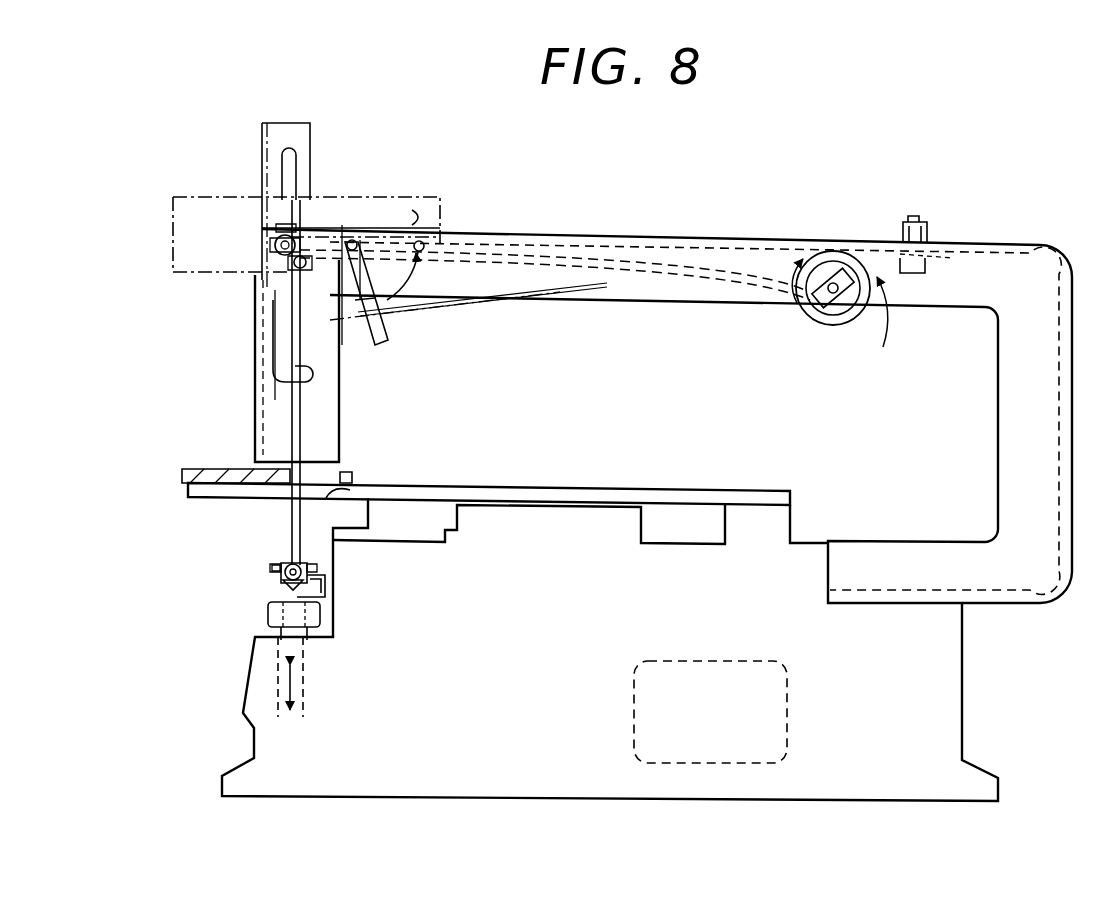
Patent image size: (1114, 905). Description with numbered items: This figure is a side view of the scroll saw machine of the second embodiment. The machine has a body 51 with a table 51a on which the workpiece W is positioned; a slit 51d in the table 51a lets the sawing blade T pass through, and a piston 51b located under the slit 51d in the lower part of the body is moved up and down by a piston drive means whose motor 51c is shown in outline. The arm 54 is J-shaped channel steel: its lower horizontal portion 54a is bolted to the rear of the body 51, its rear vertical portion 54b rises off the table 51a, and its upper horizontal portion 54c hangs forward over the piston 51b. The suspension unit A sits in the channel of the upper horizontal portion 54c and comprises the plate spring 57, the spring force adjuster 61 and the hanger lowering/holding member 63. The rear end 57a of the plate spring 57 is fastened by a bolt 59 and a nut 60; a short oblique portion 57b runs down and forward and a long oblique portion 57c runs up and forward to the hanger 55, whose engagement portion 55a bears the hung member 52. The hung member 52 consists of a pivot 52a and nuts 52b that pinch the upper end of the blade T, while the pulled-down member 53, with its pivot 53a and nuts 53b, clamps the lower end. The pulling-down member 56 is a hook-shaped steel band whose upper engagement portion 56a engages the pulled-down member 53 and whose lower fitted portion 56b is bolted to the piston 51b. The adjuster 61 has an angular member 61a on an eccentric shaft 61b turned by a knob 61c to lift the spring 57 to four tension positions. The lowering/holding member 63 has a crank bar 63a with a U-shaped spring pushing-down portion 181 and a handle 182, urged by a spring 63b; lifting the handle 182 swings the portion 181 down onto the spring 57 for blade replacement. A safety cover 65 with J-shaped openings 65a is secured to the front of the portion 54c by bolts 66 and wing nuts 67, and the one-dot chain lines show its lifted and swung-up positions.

The body 51 is at (947, 720).
The table 51a is at (753, 494).
The piston 51b is at (278, 672).
The motor 51c is at (782, 703).
The slit 51d is at (340, 493).
The hung member 52 is at (170, 300).
The pivot 52a is at (352, 240).
The nut 52b is at (313, 215).
The pulled-down member 53 is at (280, 558).
The pivot 53a is at (303, 563).
The nut 53b is at (297, 562).
The arm 54 is at (1078, 262).
The lower horizontal portion 54a is at (935, 558).
The rear vertical portion 54b is at (1030, 404).
The upper horizontal portion 54c is at (672, 236).
The hanger 55 is at (380, 345).
The engagement portion 55a is at (294, 262).
The pulling-down member 56 is at (325, 588).
The upper engagement portion 56a is at (280, 572).
The lower fitted portion 56b is at (277, 598).
The plate spring 57 is at (729, 268).
The rear end 57a is at (958, 251).
The short oblique portion 57b is at (800, 312).
The long oblique portion 57c is at (678, 285).
The bolt 59 is at (912, 275).
The nut 60 is at (900, 220).
The spring force adjuster 61 is at (852, 332).
The angular member 61a is at (896, 328).
The shaft 61b is at (811, 252).
The knob 61c is at (823, 327).
The hanger lowering/holding member 63 is at (410, 281).
The crank bar 63a is at (428, 232).
The spring 63b is at (376, 228).
The safety cover 65 is at (255, 380).
The J-shaped opening 65a is at (277, 348).
The bolt 66 is at (284, 232).
The wing nut 67 is at (275, 226).
The spring pushing-down portion 181 is at (450, 242).
The handle 182 is at (387, 335).
The sawing blade T is at (290, 407).
The workpiece W is at (202, 468).
The suspension unit A is at (524, 364).